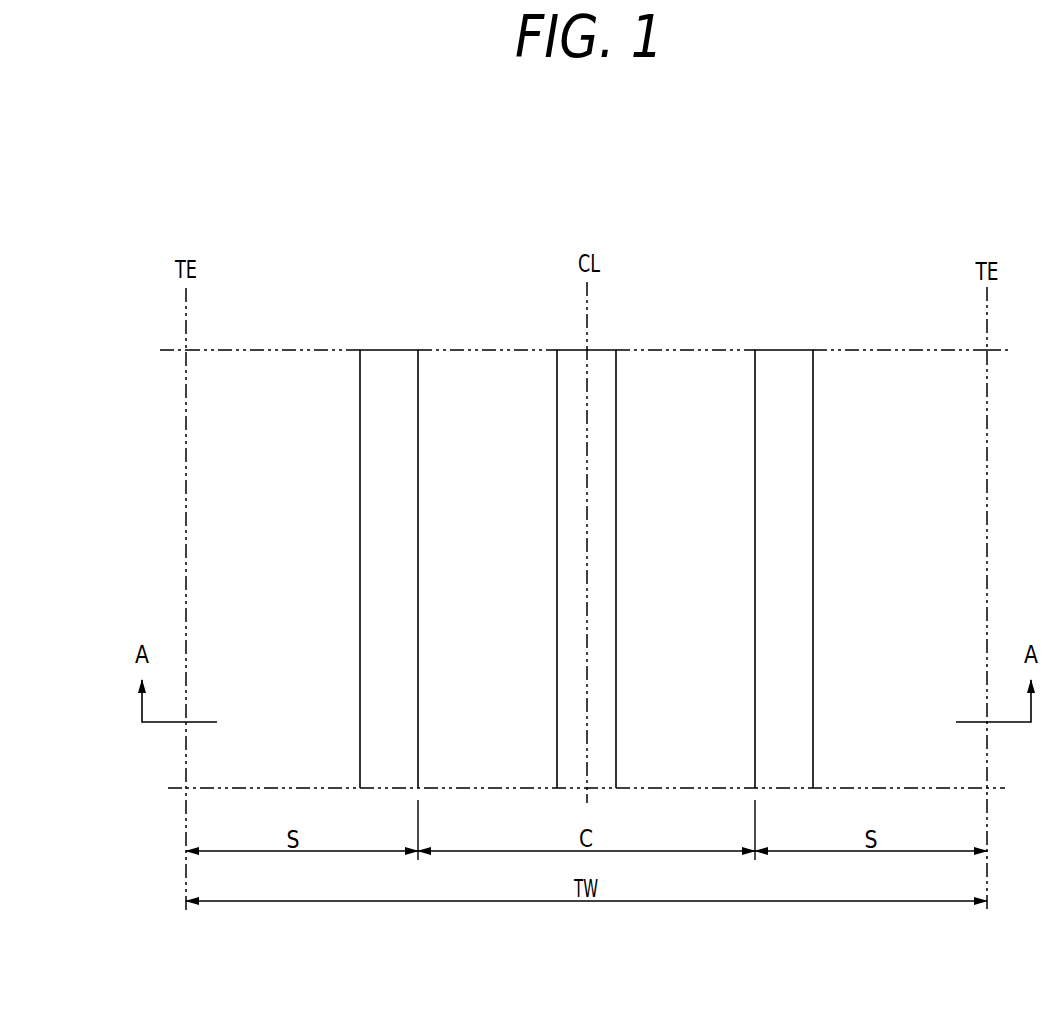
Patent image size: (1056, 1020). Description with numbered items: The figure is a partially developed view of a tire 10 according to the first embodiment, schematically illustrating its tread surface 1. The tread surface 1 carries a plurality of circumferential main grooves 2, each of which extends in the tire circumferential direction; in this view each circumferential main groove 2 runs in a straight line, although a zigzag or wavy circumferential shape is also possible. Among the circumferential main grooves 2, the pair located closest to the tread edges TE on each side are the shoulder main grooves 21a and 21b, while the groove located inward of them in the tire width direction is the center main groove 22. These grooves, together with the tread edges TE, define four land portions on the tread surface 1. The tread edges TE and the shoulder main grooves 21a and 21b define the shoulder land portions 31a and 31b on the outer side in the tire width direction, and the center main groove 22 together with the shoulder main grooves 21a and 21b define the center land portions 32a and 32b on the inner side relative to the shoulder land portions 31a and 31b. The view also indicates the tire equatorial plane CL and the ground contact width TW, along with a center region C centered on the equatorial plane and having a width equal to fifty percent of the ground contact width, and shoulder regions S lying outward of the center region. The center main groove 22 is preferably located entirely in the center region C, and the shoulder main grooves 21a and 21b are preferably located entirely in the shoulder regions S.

The tire 10 is at (920, 174).
The tread surface 1 is at (784, 253).
The circumferential main grooves 2 is at (586, 539).
The shoulder main groove 21a is at (387, 373).
The shoulder main groove 21b is at (783, 375).
The center main groove 22 is at (573, 370).
The shoulder land portion 31a is at (278, 374).
The shoulder land portion 31b is at (905, 375).
The center land portion 32a is at (472, 374).
The center land portion 32b is at (685, 375).